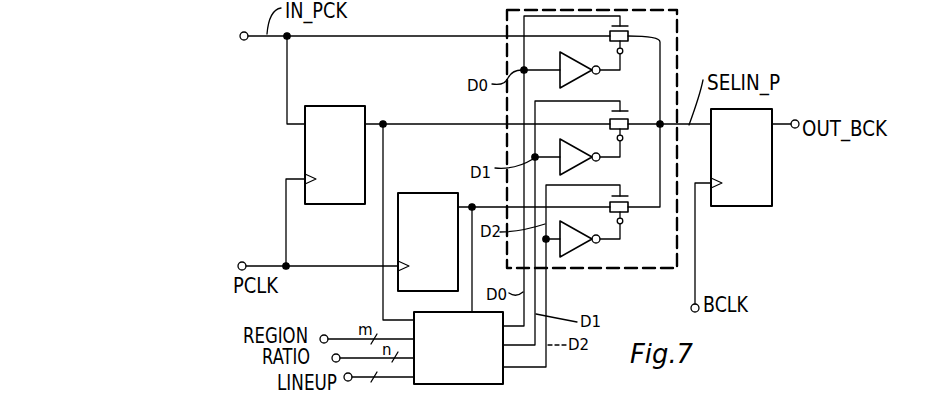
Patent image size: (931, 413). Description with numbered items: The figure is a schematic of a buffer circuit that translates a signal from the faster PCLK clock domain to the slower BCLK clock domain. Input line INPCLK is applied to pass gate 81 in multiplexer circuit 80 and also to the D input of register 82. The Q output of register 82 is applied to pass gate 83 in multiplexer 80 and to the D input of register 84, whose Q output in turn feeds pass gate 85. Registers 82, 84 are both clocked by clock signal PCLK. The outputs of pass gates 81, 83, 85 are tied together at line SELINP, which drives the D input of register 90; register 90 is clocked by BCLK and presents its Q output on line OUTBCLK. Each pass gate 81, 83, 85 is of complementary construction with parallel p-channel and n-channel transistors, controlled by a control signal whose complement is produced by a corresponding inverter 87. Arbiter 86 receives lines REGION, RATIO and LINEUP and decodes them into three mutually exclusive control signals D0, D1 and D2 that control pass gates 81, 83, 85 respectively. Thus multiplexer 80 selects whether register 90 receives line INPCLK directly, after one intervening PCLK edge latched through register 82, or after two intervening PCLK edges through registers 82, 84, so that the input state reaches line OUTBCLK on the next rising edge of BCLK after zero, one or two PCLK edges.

The multiplexer circuit 80 is at (678, 30).
The pass gate 81 is at (632, 43).
The register 82 is at (343, 168).
The pass gate 83 is at (630, 129).
The register 84 is at (436, 255).
The pass gate 85 is at (630, 212).
The arbiter 86 is at (482, 371).
The inverter 87 is at (558, 52).
The register 90 is at (750, 172).